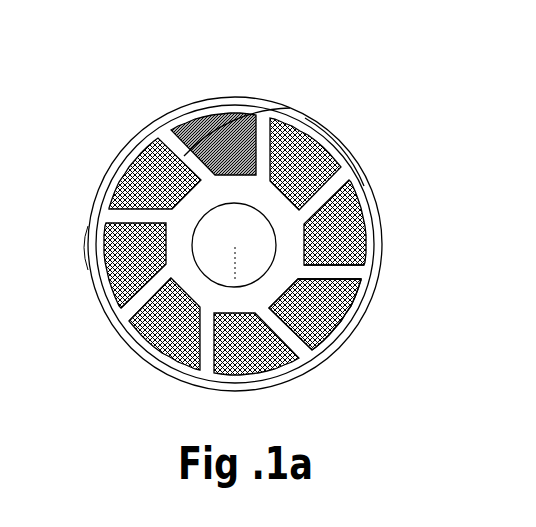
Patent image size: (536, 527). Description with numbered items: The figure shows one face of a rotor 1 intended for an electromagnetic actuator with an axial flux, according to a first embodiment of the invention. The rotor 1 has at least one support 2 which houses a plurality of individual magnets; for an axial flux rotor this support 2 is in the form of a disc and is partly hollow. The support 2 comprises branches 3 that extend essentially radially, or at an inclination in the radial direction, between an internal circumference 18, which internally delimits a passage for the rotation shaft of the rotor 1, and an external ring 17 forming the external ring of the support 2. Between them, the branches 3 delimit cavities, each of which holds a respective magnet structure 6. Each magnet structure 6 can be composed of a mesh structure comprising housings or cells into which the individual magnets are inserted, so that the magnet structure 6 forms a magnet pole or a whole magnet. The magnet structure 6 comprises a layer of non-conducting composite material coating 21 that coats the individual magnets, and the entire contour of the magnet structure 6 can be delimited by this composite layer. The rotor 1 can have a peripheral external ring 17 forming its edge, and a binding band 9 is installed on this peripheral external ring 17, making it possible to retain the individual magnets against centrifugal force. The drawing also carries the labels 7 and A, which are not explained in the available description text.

The rotor 1 is at (348, 372).
The support 2 is at (350, 157).
The branches 3 is at (277, 271).
The magnet structure 6 is at (135, 327).
The filter segment 7 is at (124, 162).
The binding band 9 is at (273, 104).
The external ring 17 is at (365, 240).
The internal circumference 18 is at (348, 322).
The composite material coating 21 is at (195, 102).
The axis A is at (228, 281).